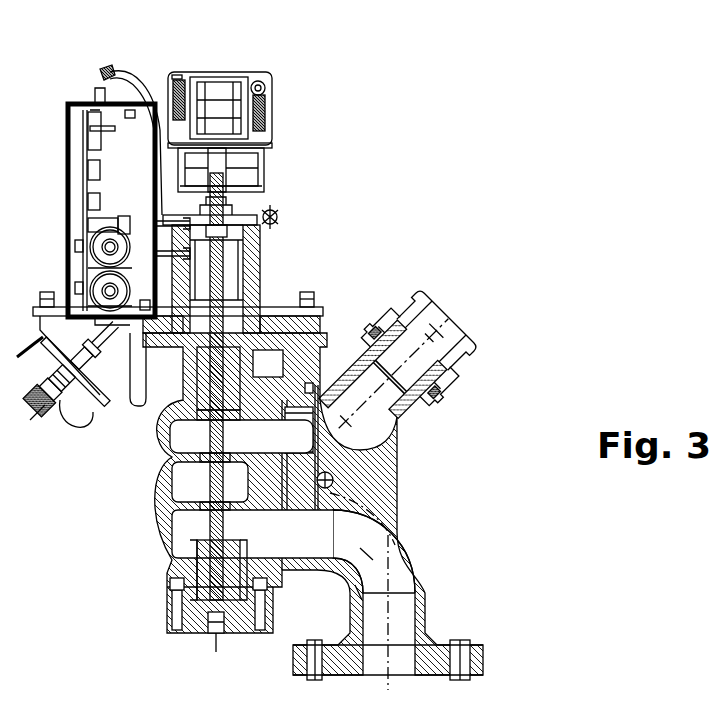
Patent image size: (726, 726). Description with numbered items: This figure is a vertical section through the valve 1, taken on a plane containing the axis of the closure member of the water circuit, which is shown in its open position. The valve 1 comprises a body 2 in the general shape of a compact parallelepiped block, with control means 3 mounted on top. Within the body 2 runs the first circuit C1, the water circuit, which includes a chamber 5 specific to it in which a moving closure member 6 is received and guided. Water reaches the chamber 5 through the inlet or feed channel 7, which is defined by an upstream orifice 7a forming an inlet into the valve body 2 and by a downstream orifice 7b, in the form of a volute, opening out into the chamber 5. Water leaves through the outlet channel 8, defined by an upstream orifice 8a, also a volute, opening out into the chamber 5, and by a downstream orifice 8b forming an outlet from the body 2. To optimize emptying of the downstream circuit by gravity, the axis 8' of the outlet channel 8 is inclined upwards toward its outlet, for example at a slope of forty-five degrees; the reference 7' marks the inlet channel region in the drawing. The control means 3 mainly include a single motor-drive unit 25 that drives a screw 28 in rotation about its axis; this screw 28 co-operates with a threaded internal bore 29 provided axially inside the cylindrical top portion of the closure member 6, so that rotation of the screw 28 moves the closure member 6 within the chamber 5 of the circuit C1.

The valve 1 is at (380, 226).
The body 2 is at (174, 381).
The control means 3 is at (280, 142).
The chamber 5 is at (187, 599).
The closure member 6 is at (198, 587).
The channel for water inlet 7 is at (388, 591).
The elbow inner wall 7' is at (418, 574).
The upstream orifice 7a is at (368, 686).
The downstream orifice 7b is at (264, 530).
The channel for water outlet 8 is at (393, 370).
The axis of the outlet channel 8' is at (439, 356).
The upstream orifice 8a is at (250, 442).
The downstream orifice 8b is at (449, 299).
The motor-drive unit 25 is at (218, 90).
The screw 28 is at (224, 272).
The threaded internal bore 29 is at (238, 374).
The first circuit C1 is at (190, 483).